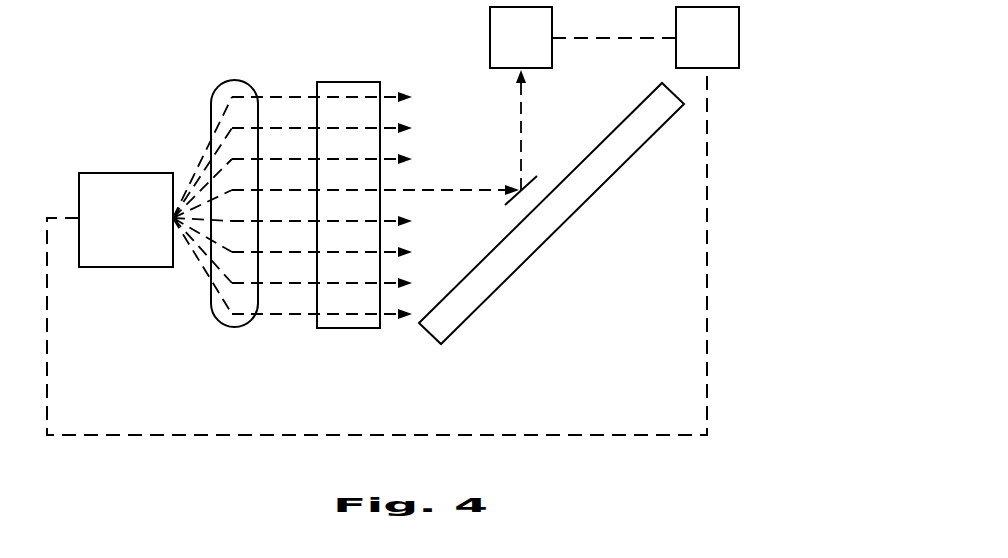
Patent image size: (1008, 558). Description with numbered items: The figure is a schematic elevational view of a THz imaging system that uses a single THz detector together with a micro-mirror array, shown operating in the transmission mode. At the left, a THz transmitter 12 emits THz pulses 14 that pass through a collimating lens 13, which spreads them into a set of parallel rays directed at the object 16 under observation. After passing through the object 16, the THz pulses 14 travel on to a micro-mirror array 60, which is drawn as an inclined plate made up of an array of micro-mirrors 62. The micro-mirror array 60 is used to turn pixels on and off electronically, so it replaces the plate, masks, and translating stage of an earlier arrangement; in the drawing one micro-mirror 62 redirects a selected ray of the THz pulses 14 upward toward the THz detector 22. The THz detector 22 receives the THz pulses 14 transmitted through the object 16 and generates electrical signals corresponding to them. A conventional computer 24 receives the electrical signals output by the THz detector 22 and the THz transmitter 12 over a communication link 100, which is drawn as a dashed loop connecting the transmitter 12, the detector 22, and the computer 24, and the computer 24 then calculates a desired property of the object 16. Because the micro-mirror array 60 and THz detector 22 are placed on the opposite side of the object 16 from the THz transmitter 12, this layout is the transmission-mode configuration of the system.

The communication link 100 is at (102, 433).
The THz transmitter 12 is at (117, 173).
The collimating lens 13 is at (235, 80).
The THz pulses 14 is at (270, 316).
The object 16 is at (345, 328).
The THz detector 22 is at (490, 35).
The computer 24 is at (674, 54).
The micro-mirror array 60 is at (543, 245).
The micro-mirror 62 is at (530, 177).